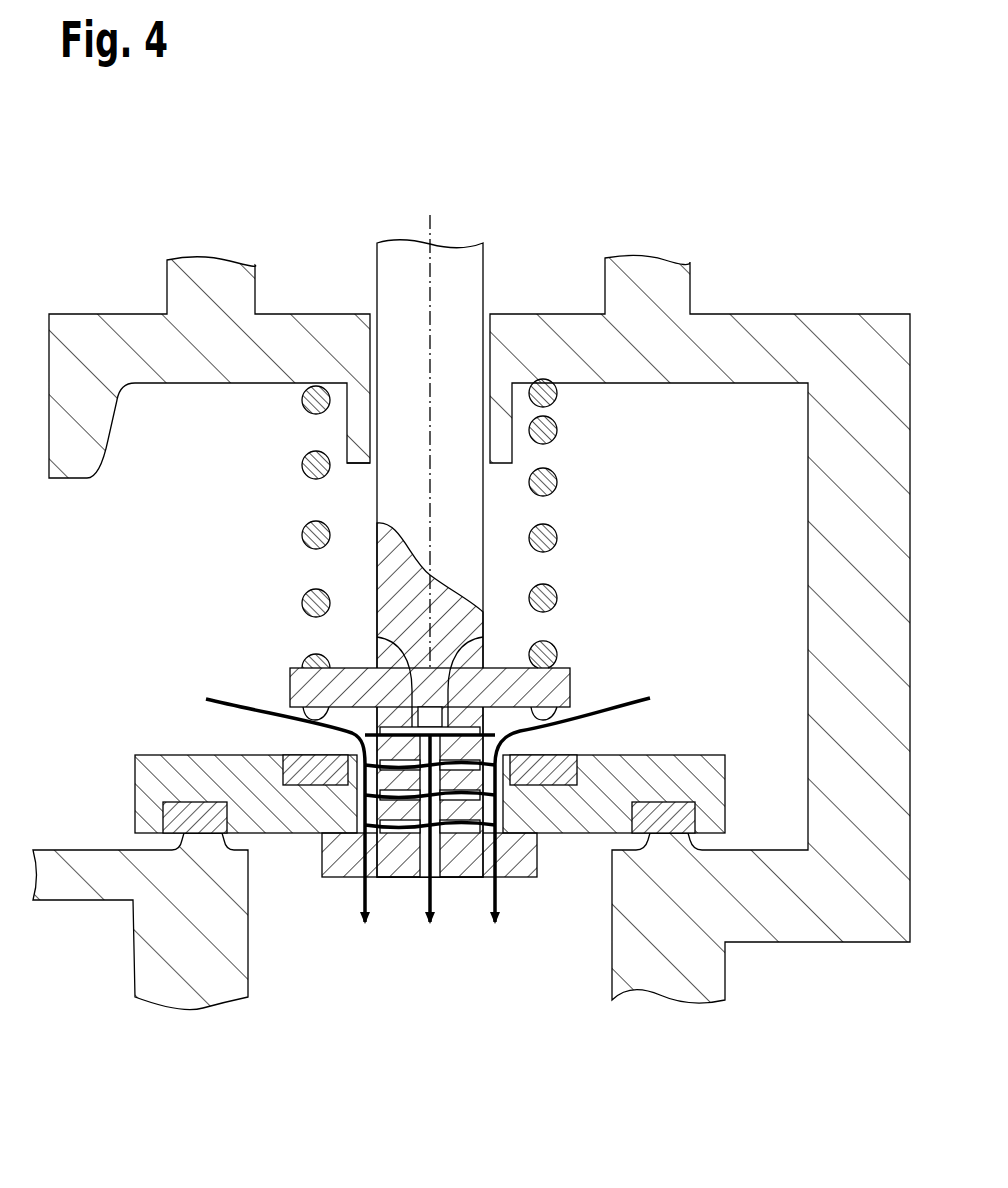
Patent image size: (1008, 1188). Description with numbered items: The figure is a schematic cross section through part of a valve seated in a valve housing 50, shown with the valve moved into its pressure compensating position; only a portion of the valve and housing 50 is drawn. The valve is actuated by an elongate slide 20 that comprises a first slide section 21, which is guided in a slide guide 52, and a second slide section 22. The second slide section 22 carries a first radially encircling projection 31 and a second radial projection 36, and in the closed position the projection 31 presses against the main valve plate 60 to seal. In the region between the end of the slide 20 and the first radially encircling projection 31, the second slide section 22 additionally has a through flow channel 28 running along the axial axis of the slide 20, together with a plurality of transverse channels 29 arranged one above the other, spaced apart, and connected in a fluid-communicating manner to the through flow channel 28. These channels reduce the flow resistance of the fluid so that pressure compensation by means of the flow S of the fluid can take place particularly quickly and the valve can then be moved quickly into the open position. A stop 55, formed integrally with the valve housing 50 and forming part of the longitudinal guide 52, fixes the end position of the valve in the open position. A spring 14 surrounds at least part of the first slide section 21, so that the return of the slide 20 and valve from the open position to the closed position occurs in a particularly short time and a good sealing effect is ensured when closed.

The spring 14 is at (557, 431).
The slide 20 is at (102, 586).
The first slide section 21 is at (483, 512).
The second slide section 22 is at (227, 655).
The through flow channel 28 is at (422, 890).
The transverse channels 29 is at (378, 639).
The first radially encircling projection 31 is at (570, 690).
The second radial projection 36 is at (540, 848).
The valve housing 50 is at (128, 313).
The slide guide 52 is at (392, 374).
The stop 55 is at (349, 485).
The main valve plate 60 is at (112, 748).
The flow S is at (206, 699).